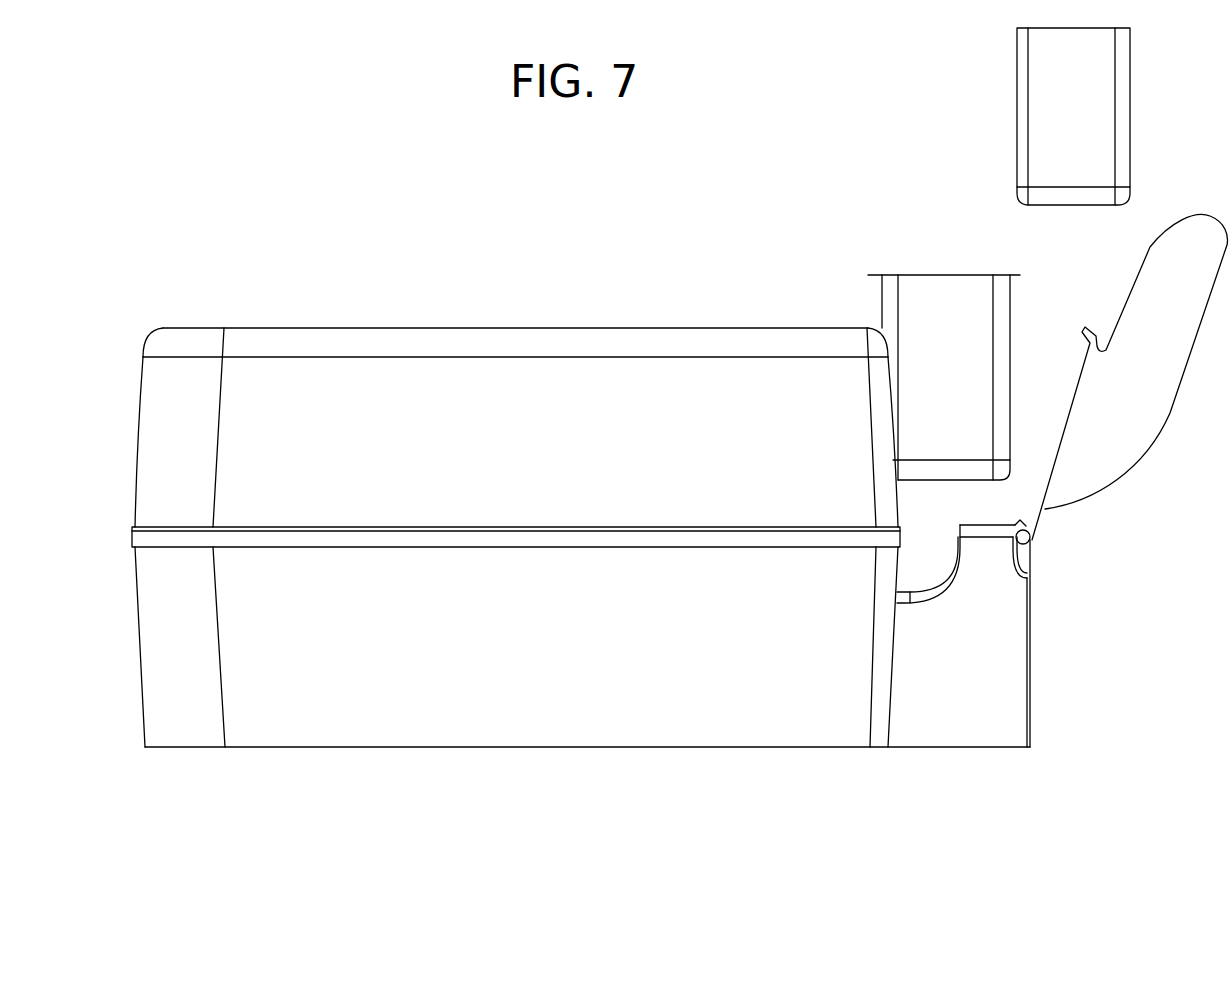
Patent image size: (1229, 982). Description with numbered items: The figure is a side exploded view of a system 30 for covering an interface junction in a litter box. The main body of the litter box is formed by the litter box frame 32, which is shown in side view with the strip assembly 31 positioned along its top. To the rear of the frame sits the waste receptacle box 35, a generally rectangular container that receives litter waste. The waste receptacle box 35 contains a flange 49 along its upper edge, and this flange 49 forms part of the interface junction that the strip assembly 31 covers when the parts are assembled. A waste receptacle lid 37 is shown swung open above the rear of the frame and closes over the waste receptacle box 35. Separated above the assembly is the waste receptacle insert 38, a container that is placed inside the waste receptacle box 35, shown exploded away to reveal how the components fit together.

The litter box assembly 30 is at (590, 267).
The strip assembly 31 is at (905, 230).
The litter box frame 32 is at (591, 720).
The waste receptacle box 35 is at (900, 330).
The waste receptacle lid 37 is at (1043, 507).
The waste receptacle insert 38 is at (1060, 153).
The flange 49 is at (1020, 275).